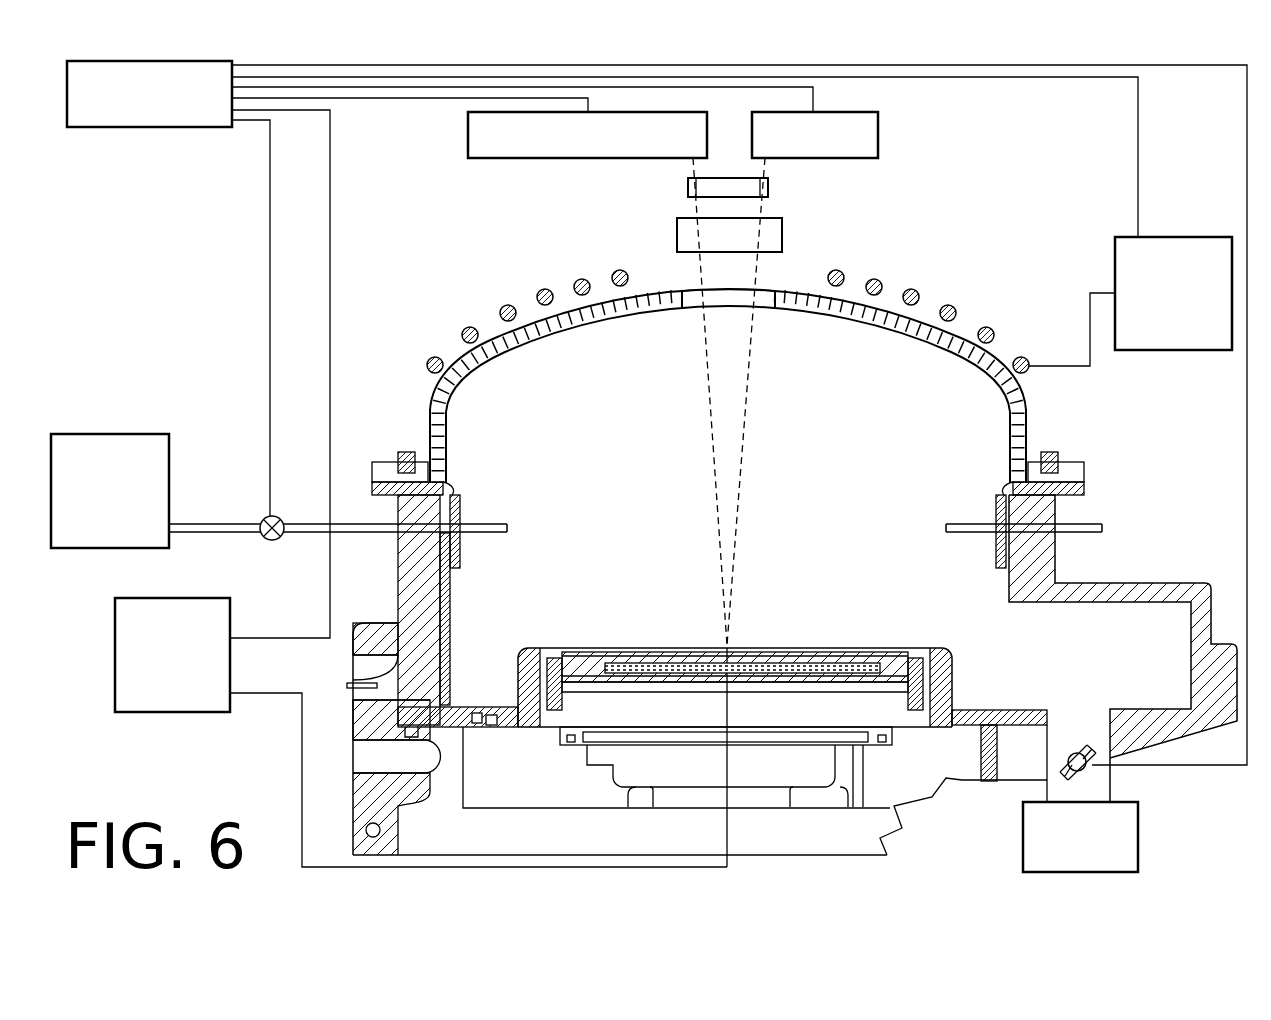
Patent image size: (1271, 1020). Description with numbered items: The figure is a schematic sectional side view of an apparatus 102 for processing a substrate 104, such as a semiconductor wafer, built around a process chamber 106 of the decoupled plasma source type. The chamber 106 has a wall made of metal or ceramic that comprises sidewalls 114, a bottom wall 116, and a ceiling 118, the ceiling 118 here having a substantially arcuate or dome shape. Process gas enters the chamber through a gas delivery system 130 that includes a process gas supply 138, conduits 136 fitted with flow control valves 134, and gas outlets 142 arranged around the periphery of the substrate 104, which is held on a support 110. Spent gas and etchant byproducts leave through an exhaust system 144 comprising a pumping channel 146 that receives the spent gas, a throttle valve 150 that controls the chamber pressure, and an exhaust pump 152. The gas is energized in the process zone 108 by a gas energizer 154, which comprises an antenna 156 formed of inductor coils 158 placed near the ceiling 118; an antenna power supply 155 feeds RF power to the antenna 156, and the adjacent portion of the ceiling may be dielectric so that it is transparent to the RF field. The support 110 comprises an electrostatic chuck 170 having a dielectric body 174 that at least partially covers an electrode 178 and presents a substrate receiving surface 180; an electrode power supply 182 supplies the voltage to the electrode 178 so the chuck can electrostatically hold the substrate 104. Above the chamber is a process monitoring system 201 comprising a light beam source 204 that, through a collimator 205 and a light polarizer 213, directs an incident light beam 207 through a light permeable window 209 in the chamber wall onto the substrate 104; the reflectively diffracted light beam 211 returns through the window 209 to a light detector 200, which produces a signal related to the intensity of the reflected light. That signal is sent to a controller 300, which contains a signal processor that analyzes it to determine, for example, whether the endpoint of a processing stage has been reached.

The apparatus 102 is at (127, 242).
The substrate 104 is at (775, 651).
The process chamber 106 is at (689, 386).
The process zone 108 is at (828, 523).
The support 110 is at (540, 643).
The sidewalls 114 is at (1008, 452).
The bottom wall 116 is at (993, 710).
The ceiling 118 is at (626, 321).
The gas delivery system 130 is at (576, 446).
The flow control valves 134 is at (272, 541).
The conduits 136 is at (363, 536).
The process gas supply 138 is at (112, 432).
The gas outlets 142 is at (511, 530).
The exhaust system 144 is at (1097, 788).
The pumping channel 146 is at (1093, 730).
The throttle valve 150 is at (1088, 771).
The exhaust pump 152 is at (1023, 838).
The gas energizer 154 is at (771, 252).
The antenna power supply 155 is at (1186, 237).
The antenna 156 is at (771, 299).
The inductor coils 158 is at (923, 280).
The electrostatic chuck 170 is at (642, 731).
The dielectric body 174 is at (590, 651).
The electrode 178 is at (668, 651).
The substrate receiving surface 180 is at (841, 651).
The electrode power supply 182 is at (115, 660).
The light detector 200 is at (880, 132).
The process monitoring system 201 is at (531, 203).
The light beam source 204 is at (468, 135).
The collimator 205 is at (783, 235).
The incident light beam 207 is at (707, 440).
The light permeable window 209 is at (765, 322).
The reflectively diffracted light beam 211 is at (755, 440).
The light polarizer 213 is at (770, 187).
The controller 300 is at (150, 128).